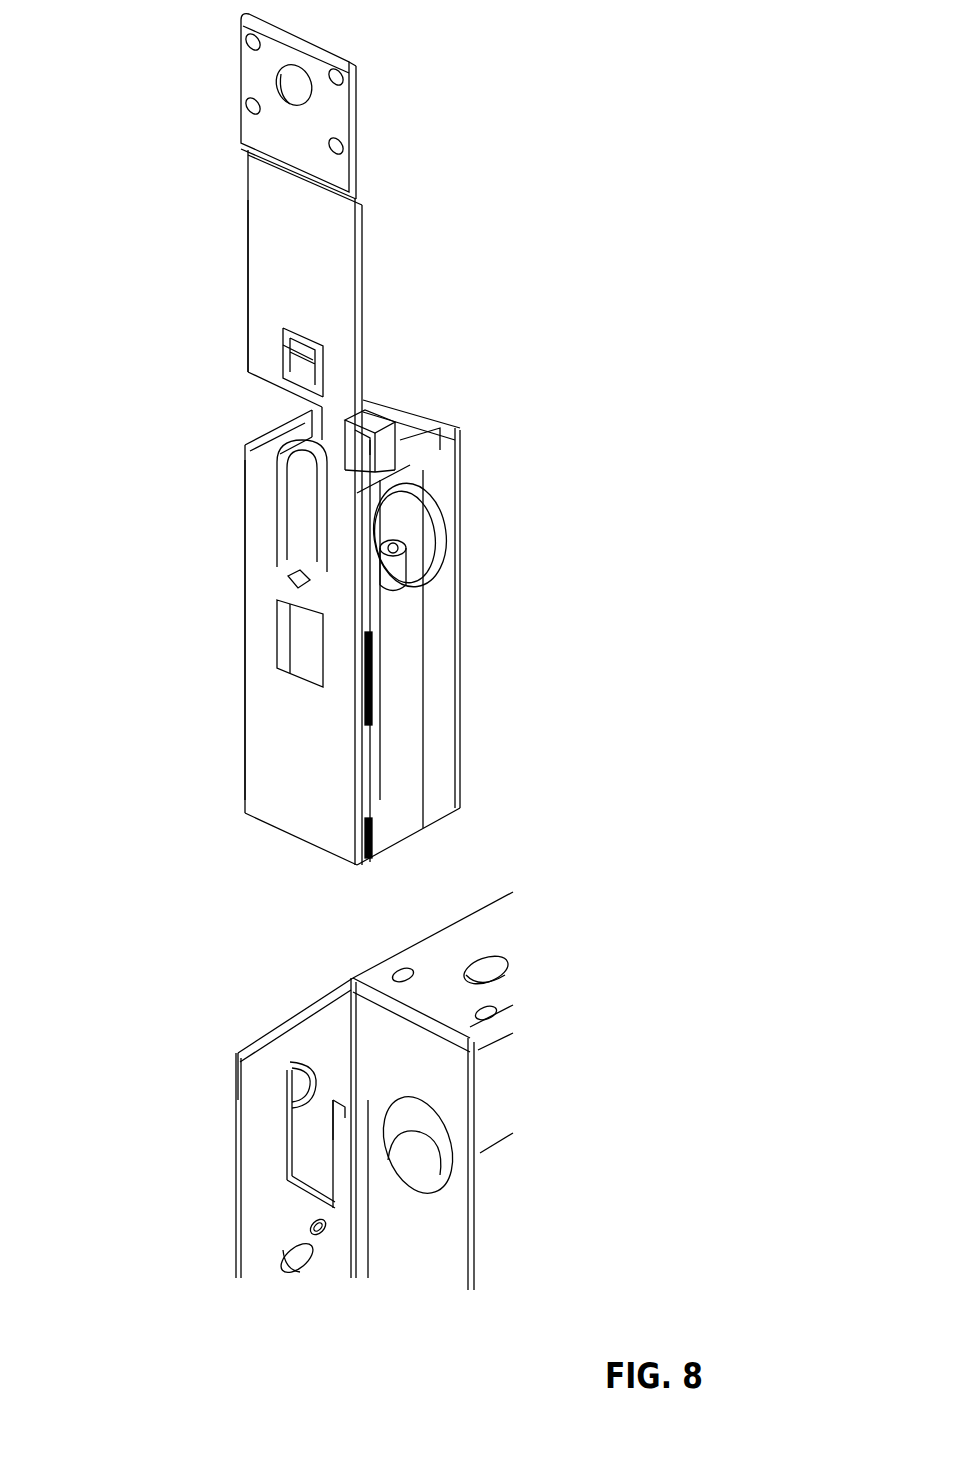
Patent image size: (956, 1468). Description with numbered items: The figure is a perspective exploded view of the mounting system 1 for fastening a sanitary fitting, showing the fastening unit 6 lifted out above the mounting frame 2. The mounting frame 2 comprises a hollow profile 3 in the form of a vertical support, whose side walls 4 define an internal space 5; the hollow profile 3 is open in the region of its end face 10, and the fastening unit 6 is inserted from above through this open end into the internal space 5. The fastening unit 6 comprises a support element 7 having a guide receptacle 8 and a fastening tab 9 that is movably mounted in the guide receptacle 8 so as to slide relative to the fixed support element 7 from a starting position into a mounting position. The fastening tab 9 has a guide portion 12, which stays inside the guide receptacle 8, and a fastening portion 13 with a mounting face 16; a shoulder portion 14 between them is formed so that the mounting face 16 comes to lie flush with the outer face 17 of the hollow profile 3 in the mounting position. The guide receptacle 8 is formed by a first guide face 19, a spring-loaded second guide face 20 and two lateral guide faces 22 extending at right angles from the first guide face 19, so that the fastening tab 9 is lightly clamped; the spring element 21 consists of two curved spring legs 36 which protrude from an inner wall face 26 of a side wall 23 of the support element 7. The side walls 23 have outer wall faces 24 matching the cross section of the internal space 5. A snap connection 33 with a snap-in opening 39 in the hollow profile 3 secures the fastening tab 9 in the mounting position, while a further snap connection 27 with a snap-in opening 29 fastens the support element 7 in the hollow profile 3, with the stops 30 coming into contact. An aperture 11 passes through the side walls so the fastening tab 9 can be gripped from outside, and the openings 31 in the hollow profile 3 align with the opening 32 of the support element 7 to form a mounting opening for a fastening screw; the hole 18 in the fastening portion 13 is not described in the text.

The mounting system 1 is at (132, 190).
The mounting frame 2 is at (262, 1258).
The hollow profile 3 is at (260, 1240).
The side walls 4 is at (262, 1061).
The internal space 5 is at (340, 1050).
The fastening unit 6 is at (366, 350).
The support element 7 is at (262, 782).
The guide receptacle 8 is at (338, 515).
The fastening tab 9 is at (273, 246).
The end face 10 is at (423, 1075).
The aperture 11 is at (312, 538).
The guide portion 12 is at (262, 302).
The fastening portion 13 is at (338, 108).
The shoulder portion 14 is at (356, 197).
The mounting face 16 is at (356, 163).
The outer face 17 is at (270, 1073).
The mounting hole 18 is at (294, 82).
The first guide face 19 is at (285, 462).
The second guide face 20 is at (323, 468).
The spring element 21 is at (378, 457).
The lateral guide faces 22 is at (285, 432).
The side wall 23 is at (395, 803).
The outer wall faces 24 is at (262, 437).
The inner wall face 26 is at (415, 450).
The snap connection 27 is at (485, 1169).
The snap-in opening 29 is at (427, 1180).
The stop 30 is at (295, 585).
The opening 31 is at (303, 1112).
The opening 32 is at (283, 494).
The snap connection 33 is at (341, 689).
The spring legs 36 is at (357, 438).
The snap-in opening 39 is at (298, 363).